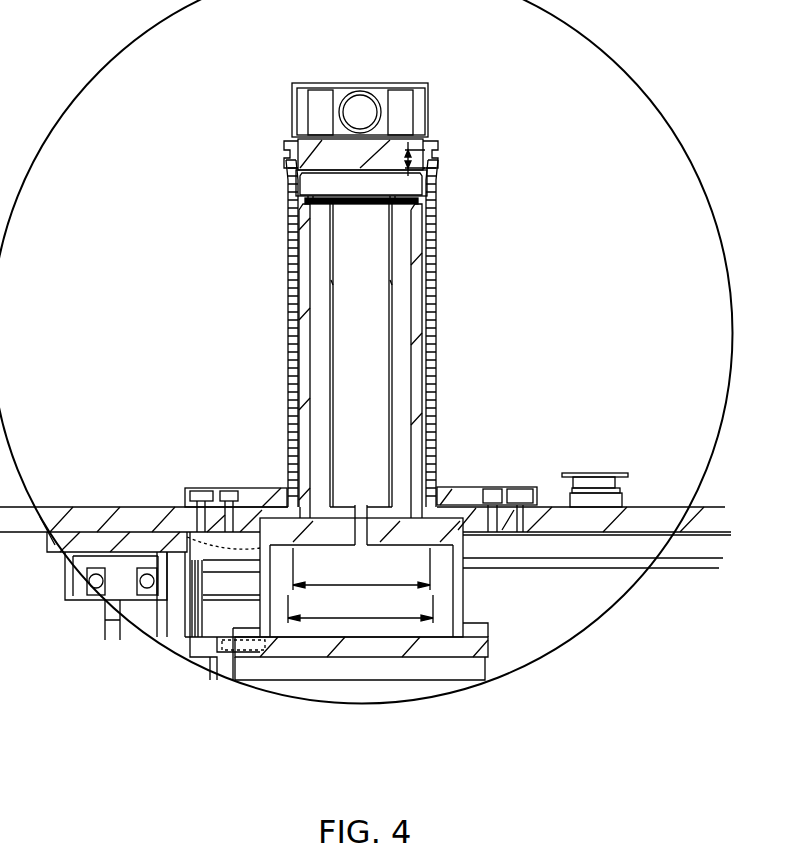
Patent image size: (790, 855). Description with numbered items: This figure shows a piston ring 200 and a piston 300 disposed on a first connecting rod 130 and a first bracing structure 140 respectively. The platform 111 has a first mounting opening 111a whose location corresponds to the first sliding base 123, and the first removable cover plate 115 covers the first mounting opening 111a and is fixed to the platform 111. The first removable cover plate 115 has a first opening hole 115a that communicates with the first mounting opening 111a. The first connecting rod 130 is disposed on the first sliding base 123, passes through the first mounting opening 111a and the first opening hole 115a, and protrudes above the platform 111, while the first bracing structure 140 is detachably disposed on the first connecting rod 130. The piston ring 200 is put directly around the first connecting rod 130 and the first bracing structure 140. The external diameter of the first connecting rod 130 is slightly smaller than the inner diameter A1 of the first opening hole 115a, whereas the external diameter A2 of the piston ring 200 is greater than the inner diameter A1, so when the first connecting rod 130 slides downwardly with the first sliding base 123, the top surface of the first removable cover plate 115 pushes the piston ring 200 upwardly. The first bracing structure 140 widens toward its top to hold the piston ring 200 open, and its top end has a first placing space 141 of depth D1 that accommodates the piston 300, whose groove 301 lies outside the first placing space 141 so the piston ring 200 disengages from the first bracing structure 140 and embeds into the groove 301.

The piston 300 is at (411, 71).
The groove 301 is at (430, 120).
The piston ring 200 is at (432, 150).
The depth of the first placing space D1 is at (432, 156).
The first bracing structure 140 is at (285, 190).
The first placing space 141 is at (298, 200).
The first connecting rod 130 is at (418, 298).
The platform 111 is at (381, 466).
The first mounting opening 111a is at (245, 548).
The first removable cover plate 115 is at (470, 493).
The first opening hole 115a is at (434, 486).
The first sliding base 123 is at (280, 518).
The inner diameter of the first opening hole A1 is at (361, 569).
The external diameter of the piston ring A2 is at (360, 608).